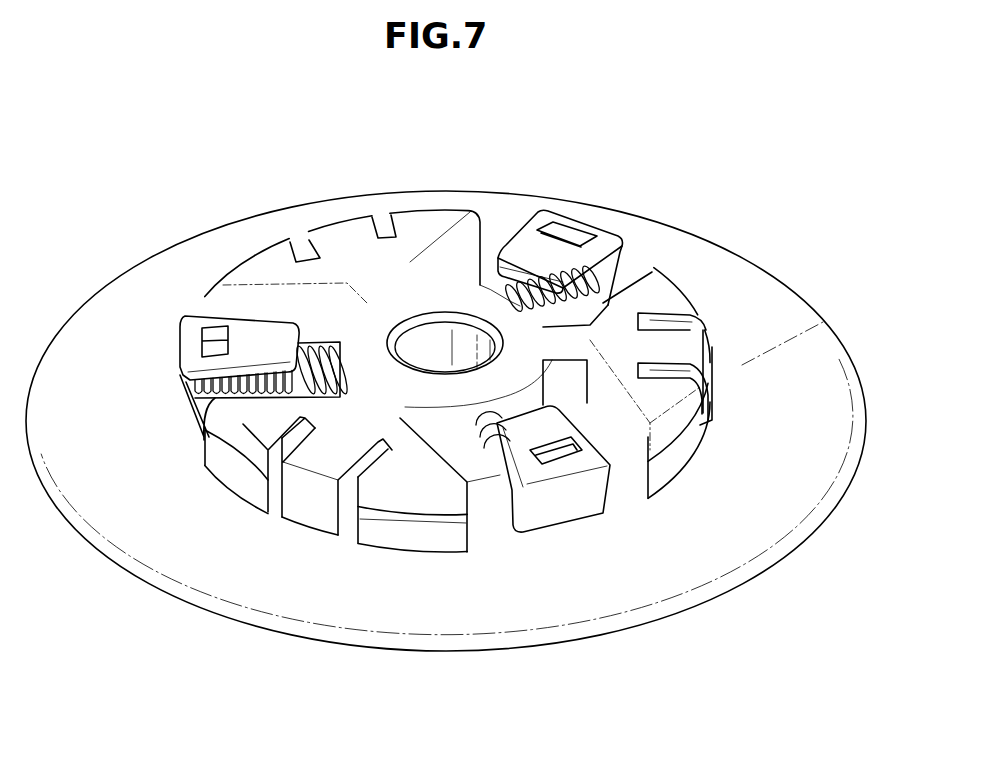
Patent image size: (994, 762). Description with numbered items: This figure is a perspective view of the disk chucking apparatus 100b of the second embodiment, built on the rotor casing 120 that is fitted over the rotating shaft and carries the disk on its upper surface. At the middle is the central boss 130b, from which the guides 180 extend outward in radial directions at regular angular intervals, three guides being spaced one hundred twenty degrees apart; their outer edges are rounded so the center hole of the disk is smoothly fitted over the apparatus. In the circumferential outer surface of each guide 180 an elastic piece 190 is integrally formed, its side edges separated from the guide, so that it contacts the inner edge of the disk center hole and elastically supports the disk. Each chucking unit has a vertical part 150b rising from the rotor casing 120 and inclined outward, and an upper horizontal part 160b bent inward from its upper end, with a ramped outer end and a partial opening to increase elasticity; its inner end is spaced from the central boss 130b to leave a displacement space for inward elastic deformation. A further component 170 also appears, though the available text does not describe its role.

The disk chucking apparatus 100b is at (203, 114).
The rotor casing 120 is at (125, 310).
The central boss 130b is at (440, 300).
The vertical part 150b is at (565, 502).
The upper horizontal part 160b is at (587, 457).
The spring 170 is at (300, 347).
The guide 180 is at (662, 296).
The elastic piece 190 is at (706, 360).